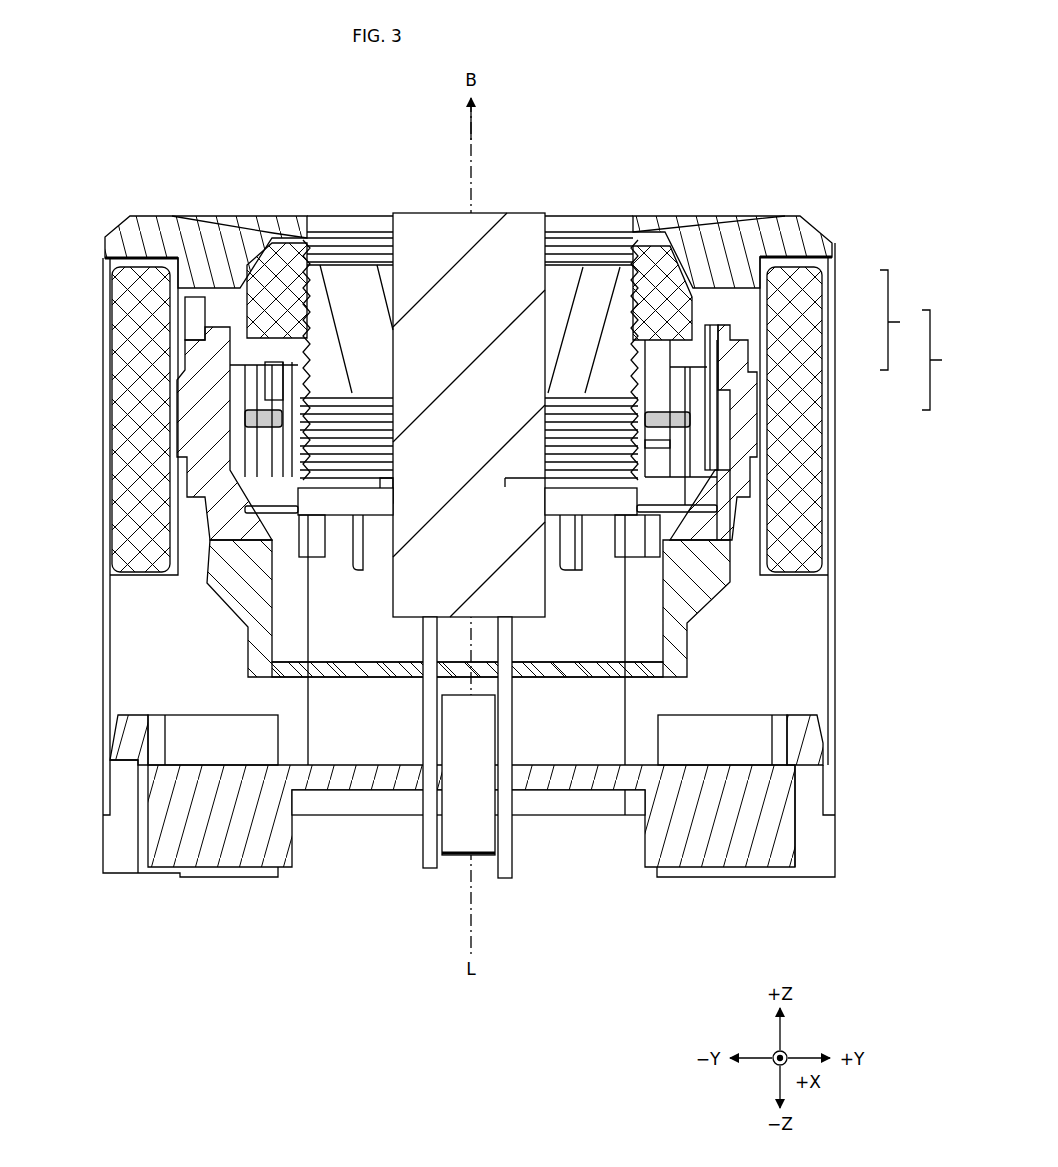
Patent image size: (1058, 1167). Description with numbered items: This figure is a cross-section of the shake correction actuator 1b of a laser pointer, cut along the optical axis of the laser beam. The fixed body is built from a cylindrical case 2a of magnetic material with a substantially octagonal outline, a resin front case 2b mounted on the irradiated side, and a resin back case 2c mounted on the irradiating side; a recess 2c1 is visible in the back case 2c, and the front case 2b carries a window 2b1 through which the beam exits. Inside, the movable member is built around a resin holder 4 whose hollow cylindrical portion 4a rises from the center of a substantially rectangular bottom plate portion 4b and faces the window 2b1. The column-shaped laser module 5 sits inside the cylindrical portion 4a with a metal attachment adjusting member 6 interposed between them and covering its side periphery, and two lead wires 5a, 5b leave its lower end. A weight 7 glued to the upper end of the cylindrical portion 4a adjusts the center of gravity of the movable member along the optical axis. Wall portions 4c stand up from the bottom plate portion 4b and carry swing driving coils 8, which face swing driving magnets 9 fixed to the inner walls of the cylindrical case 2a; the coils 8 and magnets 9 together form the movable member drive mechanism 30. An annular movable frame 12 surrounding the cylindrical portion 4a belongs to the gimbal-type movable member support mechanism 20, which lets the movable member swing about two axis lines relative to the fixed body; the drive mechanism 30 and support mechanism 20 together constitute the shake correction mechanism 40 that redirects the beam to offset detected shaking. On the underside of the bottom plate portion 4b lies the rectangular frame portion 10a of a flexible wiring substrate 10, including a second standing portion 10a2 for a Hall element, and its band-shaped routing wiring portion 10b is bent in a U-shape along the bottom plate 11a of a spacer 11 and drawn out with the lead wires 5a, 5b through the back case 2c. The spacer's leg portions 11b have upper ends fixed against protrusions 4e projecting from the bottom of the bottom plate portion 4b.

The shake correction actuator 1b is at (748, 165).
The cylindrical case 2a is at (105, 680).
The front case 2b is at (110, 238).
The window 2b1 is at (282, 216).
The back case 2c is at (145, 832).
The base recess 2c1 is at (365, 750).
The holder 4 is at (217, 318).
The cylindrical portion 4a is at (305, 238).
The bottom plate portion 4b is at (268, 487).
The wall portions 4c is at (255, 400).
The protrusions 4e is at (245, 520).
The laser module 5 is at (446, 212).
The lead wire 5a is at (425, 845).
The lead wire 5b is at (518, 845).
The attachment adjusting member 6 is at (568, 280).
The weight 7 is at (650, 262).
The swing driving coils 8 is at (197, 355).
The swing driving magnets 9 is at (120, 295).
The flexible wiring substrate 10 is at (347, 557).
The rectangular frame portion 10a is at (230, 560).
The second standing portion 10a2 is at (735, 440).
The routing wiring portion 10b is at (462, 845).
The spacer 11 is at (150, 738).
The bottom plate 11a is at (578, 672).
The leg portions 11b is at (233, 652).
The movable frame 12 is at (245, 455).
The movable member support mechanism 20 is at (705, 420).
The movable member drive mechanism 30 is at (899, 320).
The shake correction mechanism 40 is at (942, 360).